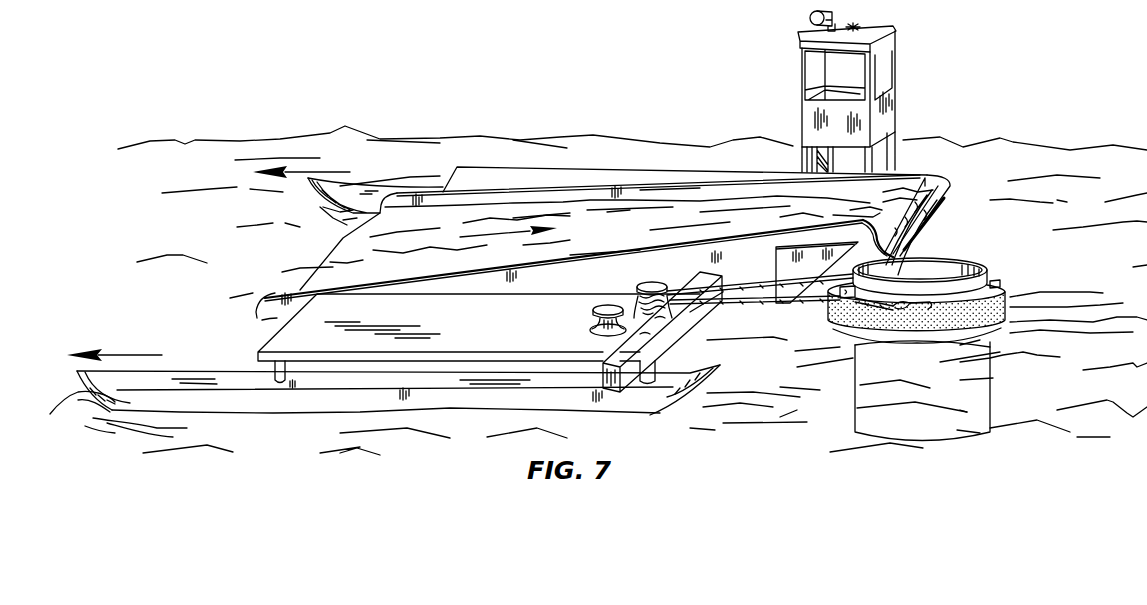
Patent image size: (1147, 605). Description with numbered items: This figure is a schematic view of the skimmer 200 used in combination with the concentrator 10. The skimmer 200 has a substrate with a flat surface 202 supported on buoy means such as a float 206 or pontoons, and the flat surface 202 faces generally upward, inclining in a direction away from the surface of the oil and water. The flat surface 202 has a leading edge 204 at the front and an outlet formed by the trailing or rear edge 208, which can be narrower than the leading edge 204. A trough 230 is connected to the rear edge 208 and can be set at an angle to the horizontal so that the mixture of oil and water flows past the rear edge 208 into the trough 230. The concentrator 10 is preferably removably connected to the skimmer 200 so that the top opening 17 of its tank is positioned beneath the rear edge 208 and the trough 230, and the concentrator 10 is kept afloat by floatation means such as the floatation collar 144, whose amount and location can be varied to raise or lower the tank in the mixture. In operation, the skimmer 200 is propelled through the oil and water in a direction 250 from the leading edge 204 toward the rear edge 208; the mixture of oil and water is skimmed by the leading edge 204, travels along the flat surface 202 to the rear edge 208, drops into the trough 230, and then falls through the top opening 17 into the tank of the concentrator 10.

The skimmer 200 is at (587, 152).
The flat surface 202 is at (297, 232).
The leading edge 204 is at (320, 258).
The float 206 is at (755, 262).
The rear edge 208 is at (925, 180).
The trough 230 is at (943, 198).
The direction 250 is at (128, 355).
The top opening 17 is at (960, 268).
The floatation collar 144 is at (1003, 287).
The concentrator 10 is at (1012, 384).